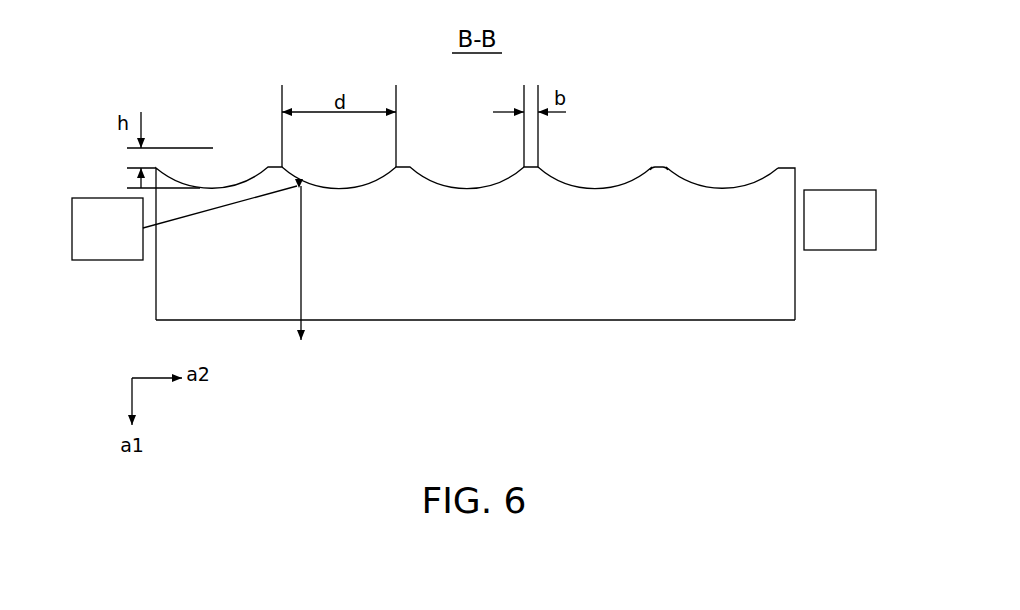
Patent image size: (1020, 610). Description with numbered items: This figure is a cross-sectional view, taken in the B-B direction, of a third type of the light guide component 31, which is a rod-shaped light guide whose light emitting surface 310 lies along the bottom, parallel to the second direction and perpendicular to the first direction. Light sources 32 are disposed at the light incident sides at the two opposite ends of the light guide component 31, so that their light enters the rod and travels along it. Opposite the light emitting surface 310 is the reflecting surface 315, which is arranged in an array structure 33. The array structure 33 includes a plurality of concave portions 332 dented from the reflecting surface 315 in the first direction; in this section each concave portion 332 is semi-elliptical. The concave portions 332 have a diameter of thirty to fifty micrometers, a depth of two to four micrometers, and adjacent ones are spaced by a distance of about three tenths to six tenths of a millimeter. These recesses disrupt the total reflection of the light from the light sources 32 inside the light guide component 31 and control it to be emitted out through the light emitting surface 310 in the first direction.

The light guide component 31 is at (795, 273).
The light emitting surface 310 is at (672, 321).
The reflecting surface 315 is at (659, 166).
The array structure 33 is at (743, 172).
The concave portions 332 is at (568, 185).
The light sources 32 is at (103, 196).